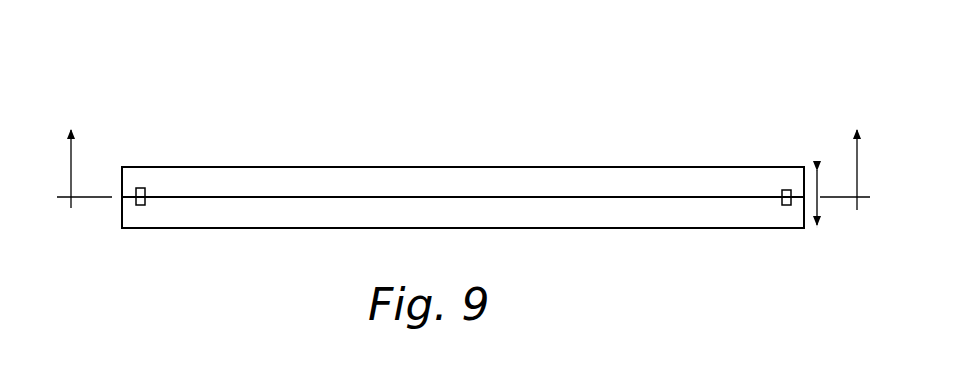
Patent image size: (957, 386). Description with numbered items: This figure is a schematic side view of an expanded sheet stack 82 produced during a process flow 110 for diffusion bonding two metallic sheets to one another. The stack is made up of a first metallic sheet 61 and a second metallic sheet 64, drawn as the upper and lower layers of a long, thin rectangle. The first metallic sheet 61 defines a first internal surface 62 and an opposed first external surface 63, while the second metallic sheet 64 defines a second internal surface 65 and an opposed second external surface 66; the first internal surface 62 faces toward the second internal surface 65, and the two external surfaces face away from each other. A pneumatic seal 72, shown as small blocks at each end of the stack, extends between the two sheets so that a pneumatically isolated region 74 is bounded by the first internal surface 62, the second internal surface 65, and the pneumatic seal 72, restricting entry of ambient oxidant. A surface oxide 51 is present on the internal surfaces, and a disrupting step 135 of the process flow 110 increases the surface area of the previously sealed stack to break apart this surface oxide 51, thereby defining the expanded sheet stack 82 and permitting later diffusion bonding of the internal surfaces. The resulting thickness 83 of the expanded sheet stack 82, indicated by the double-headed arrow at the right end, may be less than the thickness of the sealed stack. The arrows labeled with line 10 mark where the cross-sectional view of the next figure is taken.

The section line 10- 10 is at (461, 187).
The surface oxide 51 is at (397, 197).
The first metallic sheet 61 is at (187, 164).
The first internal surface 62 is at (340, 198).
The first external surface 63 is at (492, 166).
The second metallic sheet 64 is at (222, 230).
The second internal surface 65 is at (445, 198).
The second external surface 66 is at (725, 229).
The pneumatic seal 72 is at (140, 185).
The pneumatically isolated region 74 is at (659, 194).
The expanded sheet stack 82 is at (714, 278).
The thickness 83 is at (815, 208).
The process flow 110 is at (819, 79).
The disrupting step 135 is at (826, 131).